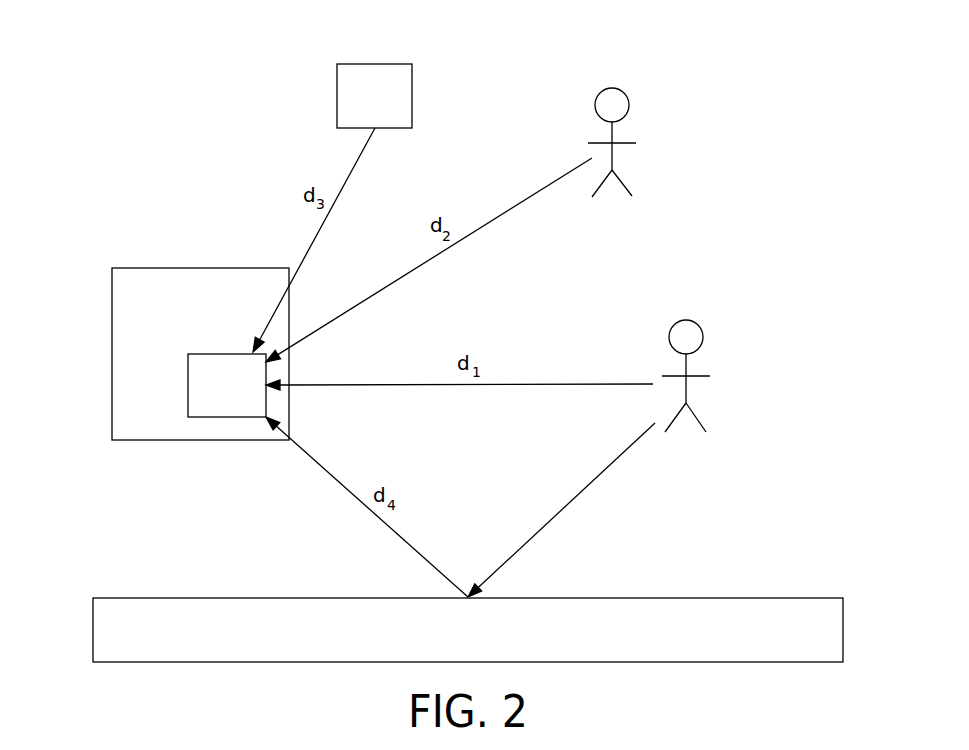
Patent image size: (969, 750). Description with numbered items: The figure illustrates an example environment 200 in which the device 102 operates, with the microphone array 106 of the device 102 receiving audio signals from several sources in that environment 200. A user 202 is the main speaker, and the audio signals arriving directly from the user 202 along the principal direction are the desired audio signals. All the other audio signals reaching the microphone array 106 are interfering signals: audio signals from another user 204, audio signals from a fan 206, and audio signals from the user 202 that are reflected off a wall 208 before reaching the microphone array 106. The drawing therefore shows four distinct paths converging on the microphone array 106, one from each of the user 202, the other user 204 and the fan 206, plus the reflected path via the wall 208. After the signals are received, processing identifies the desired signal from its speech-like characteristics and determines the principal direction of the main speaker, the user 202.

The environment 200 is at (102, 157).
The device 102 is at (112, 355).
The microphone array 106 is at (208, 417).
The user 202 is at (685, 322).
The another user 204 is at (610, 87).
The fan 206 is at (337, 95).
The wall 208 is at (687, 597).